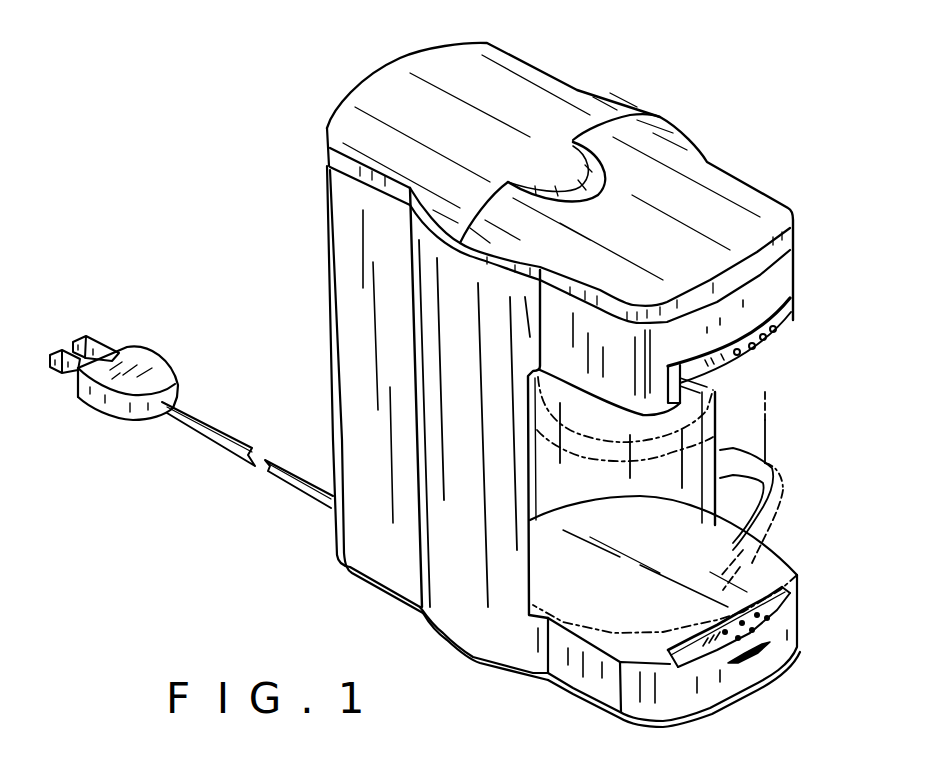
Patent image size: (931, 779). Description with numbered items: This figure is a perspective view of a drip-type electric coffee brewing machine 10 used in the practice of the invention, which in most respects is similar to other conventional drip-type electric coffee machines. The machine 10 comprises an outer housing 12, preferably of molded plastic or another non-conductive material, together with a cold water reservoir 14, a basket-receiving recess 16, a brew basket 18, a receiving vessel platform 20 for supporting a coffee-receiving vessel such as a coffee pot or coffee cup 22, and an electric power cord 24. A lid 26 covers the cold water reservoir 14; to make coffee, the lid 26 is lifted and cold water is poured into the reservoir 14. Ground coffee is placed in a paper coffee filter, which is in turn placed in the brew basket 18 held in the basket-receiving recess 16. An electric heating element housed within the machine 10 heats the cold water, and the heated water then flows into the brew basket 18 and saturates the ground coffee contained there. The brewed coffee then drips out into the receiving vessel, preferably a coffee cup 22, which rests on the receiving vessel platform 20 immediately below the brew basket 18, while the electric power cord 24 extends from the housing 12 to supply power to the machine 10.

The electric coffee brewing machine 10 is at (650, 96).
The outer housing 12 is at (477, 597).
The cold water reservoir 14 is at (350, 240).
The basket-receiving recess 16 is at (683, 383).
The brew basket 18 is at (792, 313).
The receiving vessel platform 20 is at (617, 647).
The coffee cup 22 is at (662, 637).
The electric power cord 24 is at (166, 358).
The lid 26 is at (545, 125).